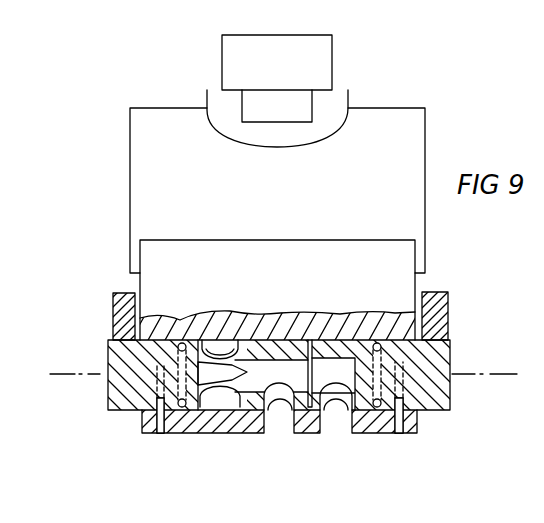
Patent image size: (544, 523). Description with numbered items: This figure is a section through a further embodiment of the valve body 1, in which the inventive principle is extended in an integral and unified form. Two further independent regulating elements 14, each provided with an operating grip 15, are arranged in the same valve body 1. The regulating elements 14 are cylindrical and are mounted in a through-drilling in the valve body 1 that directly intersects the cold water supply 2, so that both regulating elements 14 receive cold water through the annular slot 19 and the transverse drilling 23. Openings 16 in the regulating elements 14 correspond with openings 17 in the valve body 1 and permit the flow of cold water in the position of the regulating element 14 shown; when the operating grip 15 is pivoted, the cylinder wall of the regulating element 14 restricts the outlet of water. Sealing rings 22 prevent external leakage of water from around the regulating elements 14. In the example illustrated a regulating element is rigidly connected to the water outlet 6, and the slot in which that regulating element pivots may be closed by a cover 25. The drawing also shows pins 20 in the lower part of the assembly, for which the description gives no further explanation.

The valve body 1 is at (405, 203).
The cold water supply 2 is at (224, 433).
The water outlet 6 is at (313, 73).
The regulating element 14 is at (118, 395).
The operating grip 15 is at (122, 318).
The opening 16 is at (283, 392).
The opening 17 is at (283, 405).
The annular slot 19 is at (223, 348).
The pin 20 is at (160, 433).
The sealing ring 22 is at (188, 433).
The transverse drilling 23 is at (246, 372).
The cover 25 is at (322, 126).